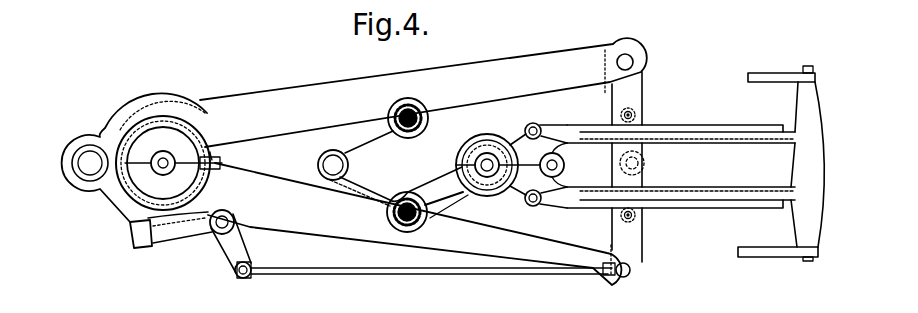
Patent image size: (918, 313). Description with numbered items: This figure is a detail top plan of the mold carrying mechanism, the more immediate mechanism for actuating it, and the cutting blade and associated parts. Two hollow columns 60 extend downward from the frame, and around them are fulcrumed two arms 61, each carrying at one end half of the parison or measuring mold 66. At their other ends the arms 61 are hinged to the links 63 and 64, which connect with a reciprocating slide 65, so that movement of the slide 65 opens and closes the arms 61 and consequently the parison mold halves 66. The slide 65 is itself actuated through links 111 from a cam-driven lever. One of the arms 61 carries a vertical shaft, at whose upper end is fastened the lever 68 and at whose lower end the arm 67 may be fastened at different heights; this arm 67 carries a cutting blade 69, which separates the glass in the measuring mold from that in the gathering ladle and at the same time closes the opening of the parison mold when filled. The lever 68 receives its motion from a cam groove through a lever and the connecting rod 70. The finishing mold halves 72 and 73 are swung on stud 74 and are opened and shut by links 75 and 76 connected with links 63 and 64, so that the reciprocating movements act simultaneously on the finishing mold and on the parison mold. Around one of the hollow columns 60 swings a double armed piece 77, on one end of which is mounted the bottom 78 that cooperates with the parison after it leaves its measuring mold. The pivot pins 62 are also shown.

The hollow columns 60 is at (418, 104).
The arms 61 is at (423, 161).
The pivot pins 62 is at (598, 72).
The link 63 is at (627, 89).
The link 64 is at (629, 210).
The reciprocating slide 65 is at (681, 166).
The parison or measuring mold 66 is at (142, 157).
The arm 67 is at (185, 228).
The lever 68 is at (239, 248).
The cutting blade 69 is at (141, 240).
The connecting rod 70 is at (325, 275).
The finishing mold half 72 is at (487, 145).
The finishing mold half 73 is at (500, 192).
The stud 74 is at (566, 166).
The link 75 is at (553, 206).
The link 76 is at (552, 124).
The double armed piece 77 is at (396, 168).
The bottom 78 is at (323, 164).
The links 111 is at (765, 76).